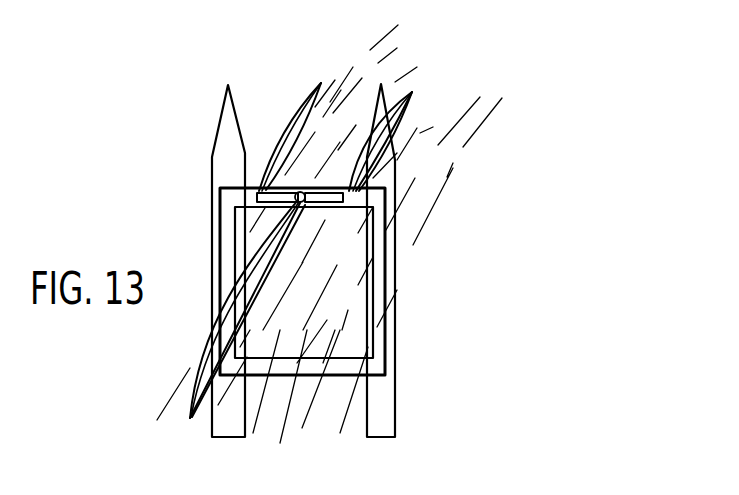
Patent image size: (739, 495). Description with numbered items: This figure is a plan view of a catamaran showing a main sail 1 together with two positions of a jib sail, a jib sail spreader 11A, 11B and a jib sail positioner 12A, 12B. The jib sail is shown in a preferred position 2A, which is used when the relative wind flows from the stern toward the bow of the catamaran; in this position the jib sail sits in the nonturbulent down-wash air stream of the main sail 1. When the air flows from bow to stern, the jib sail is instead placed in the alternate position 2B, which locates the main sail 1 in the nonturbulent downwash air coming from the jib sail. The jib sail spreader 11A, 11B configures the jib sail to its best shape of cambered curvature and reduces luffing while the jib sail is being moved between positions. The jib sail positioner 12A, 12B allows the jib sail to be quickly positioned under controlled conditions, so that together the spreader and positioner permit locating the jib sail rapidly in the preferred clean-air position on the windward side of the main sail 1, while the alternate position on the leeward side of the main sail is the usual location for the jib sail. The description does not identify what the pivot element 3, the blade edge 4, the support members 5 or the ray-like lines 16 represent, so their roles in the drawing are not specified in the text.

The main sail 1 is at (195, 357).
The jib sail preferred position 2A is at (355, 137).
The jib sail alternate position 2B is at (281, 118).
The pivot pin 3 is at (299, 205).
The blade edge 4 is at (258, 295).
The support pins 5 is at (212, 423).
The jib sail spreader 11A is at (400, 123).
The jib sail spreader 11B is at (275, 147).
The jib sail positioner 12A is at (340, 205).
The jib sail positioner 12B is at (258, 210).
The light rays 16 is at (336, 367).